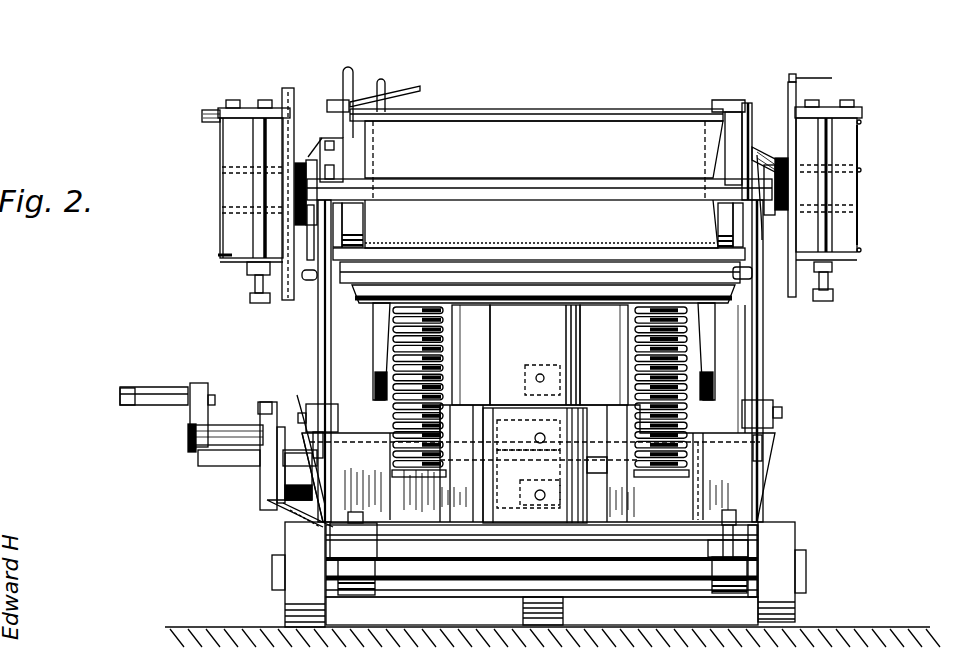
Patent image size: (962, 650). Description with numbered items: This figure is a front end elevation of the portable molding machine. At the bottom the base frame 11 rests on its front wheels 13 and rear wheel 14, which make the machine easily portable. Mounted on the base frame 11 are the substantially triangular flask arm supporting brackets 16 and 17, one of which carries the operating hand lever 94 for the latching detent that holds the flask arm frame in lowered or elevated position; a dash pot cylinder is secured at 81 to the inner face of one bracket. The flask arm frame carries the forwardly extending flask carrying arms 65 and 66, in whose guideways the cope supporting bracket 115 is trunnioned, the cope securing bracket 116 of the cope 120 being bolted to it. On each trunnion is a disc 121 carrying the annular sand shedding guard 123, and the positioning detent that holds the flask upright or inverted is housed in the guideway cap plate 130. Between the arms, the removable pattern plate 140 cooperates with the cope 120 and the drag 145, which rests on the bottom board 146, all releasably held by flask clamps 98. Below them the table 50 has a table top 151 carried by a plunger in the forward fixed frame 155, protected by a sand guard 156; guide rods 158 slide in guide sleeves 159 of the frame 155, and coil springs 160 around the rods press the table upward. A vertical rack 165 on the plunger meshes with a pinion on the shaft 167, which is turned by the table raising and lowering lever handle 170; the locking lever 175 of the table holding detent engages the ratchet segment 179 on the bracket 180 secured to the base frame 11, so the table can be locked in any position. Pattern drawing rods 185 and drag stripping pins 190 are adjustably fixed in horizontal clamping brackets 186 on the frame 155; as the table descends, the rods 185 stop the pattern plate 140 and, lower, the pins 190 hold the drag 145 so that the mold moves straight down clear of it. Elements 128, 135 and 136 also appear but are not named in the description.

The base frame 11 is at (630, 588).
The front wheels 13 is at (282, 615).
The rear wheel 14 is at (523, 612).
The flask arm supporting bracket 16 is at (725, 383).
The flask arm supporting bracket 17 is at (342, 367).
The table 50 is at (382, 93).
The flask carrying arm 65 is at (845, 234).
The flask carrying arm 66 is at (218, 258).
The cylinder securing point 81 is at (710, 372).
The operating hand lever 94 is at (343, 78).
The flask clamps 98 is at (374, 133).
The cope supporting bracket 115 is at (757, 155).
The cope securing bracket 116 is at (362, 158).
The cope 120 is at (607, 125).
The disc 121 is at (792, 84).
The annular sand shedding guard 123 is at (286, 86).
The bracket 128 is at (798, 80).
The guideway cap plate 130 is at (235, 115).
The nut 135 is at (250, 302).
The lock nut 136 is at (248, 281).
The removable pattern plate 140 is at (563, 188).
The drag 145 is at (630, 218).
The bottom board 146 is at (538, 238).
The table top 151 is at (415, 274).
The forward fixed frame 155 is at (290, 522).
The sand guard 156 is at (380, 375).
The guide rods 158 is at (515, 348).
The guide sleeves 159 is at (430, 435).
The coil springs 160 is at (350, 295).
The vertical rack 165 is at (540, 372).
The shaft 167 is at (297, 395).
The table raising and lowering lever handle 170 is at (200, 368).
The locking lever 175 is at (210, 453).
The ratchet segment 179 is at (260, 414).
The bracket 180 is at (278, 500).
The pattern drawing rods 185 is at (295, 232).
The horizontal clamping brackets 186 is at (784, 416).
The drag stripping pins 190 is at (320, 337).